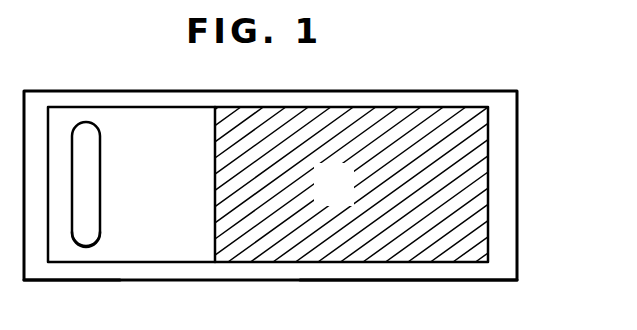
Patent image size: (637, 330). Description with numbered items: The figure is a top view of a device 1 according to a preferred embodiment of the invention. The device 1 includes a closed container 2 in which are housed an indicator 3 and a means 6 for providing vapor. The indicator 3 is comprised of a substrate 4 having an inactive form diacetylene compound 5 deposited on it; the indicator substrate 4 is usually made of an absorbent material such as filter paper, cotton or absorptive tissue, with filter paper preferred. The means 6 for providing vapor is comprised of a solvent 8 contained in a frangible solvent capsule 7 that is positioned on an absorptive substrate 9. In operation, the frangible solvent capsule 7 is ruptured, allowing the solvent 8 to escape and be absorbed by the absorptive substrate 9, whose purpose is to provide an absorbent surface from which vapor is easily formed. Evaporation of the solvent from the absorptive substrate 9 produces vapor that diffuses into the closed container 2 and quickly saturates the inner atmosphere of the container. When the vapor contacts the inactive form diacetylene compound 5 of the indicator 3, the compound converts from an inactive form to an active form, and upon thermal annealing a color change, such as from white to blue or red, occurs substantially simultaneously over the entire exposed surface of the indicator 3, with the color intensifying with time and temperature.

The device 1 is at (528, 254).
The closed container 2 is at (418, 281).
The indicator 3 is at (336, 274).
The substrate 4 is at (291, 263).
The inactive form diacetylene compound 5 is at (321, 196).
The means for providing vapor 6 is at (146, 242).
The frangible solvent capsule 7 is at (92, 246).
The solvent 8 is at (88, 170).
The absorptive substrate 9 is at (55, 270).